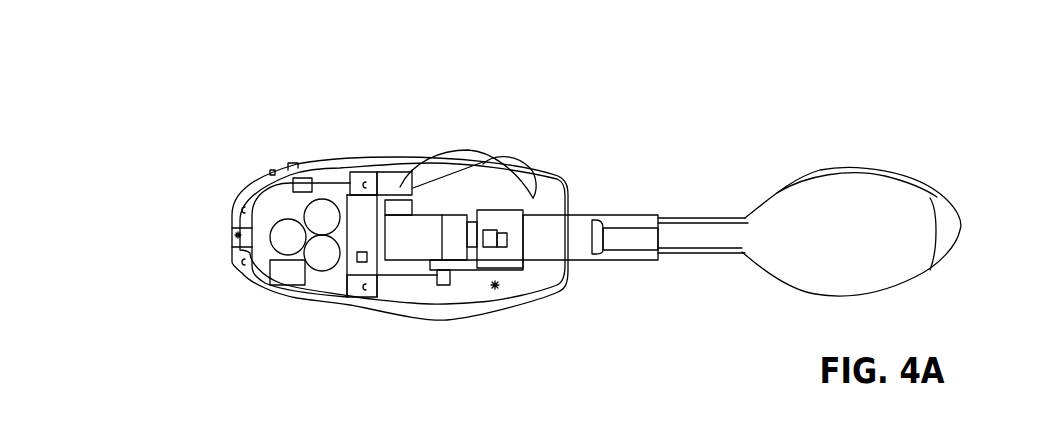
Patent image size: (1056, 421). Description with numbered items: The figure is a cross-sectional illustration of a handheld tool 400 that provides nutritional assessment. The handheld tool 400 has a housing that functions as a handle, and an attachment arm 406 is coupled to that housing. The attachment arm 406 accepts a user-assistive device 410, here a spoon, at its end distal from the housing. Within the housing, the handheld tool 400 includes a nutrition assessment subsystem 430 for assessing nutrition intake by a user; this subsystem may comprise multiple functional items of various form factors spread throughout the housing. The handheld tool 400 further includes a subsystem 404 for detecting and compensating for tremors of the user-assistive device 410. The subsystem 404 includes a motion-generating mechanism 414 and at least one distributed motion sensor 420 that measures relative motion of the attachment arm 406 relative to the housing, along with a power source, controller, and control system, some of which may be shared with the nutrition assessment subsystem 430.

The handheld tool 400 is at (894, 106).
The subsystem 404 is at (500, 190).
The attachment arm 406 is at (670, 262).
The user-assistive device 410 is at (897, 260).
The motion-generating mechanism 414 is at (397, 215).
The distributed motion sensor 420 is at (433, 287).
The nutrition assessment subsystem 430 is at (178, 147).